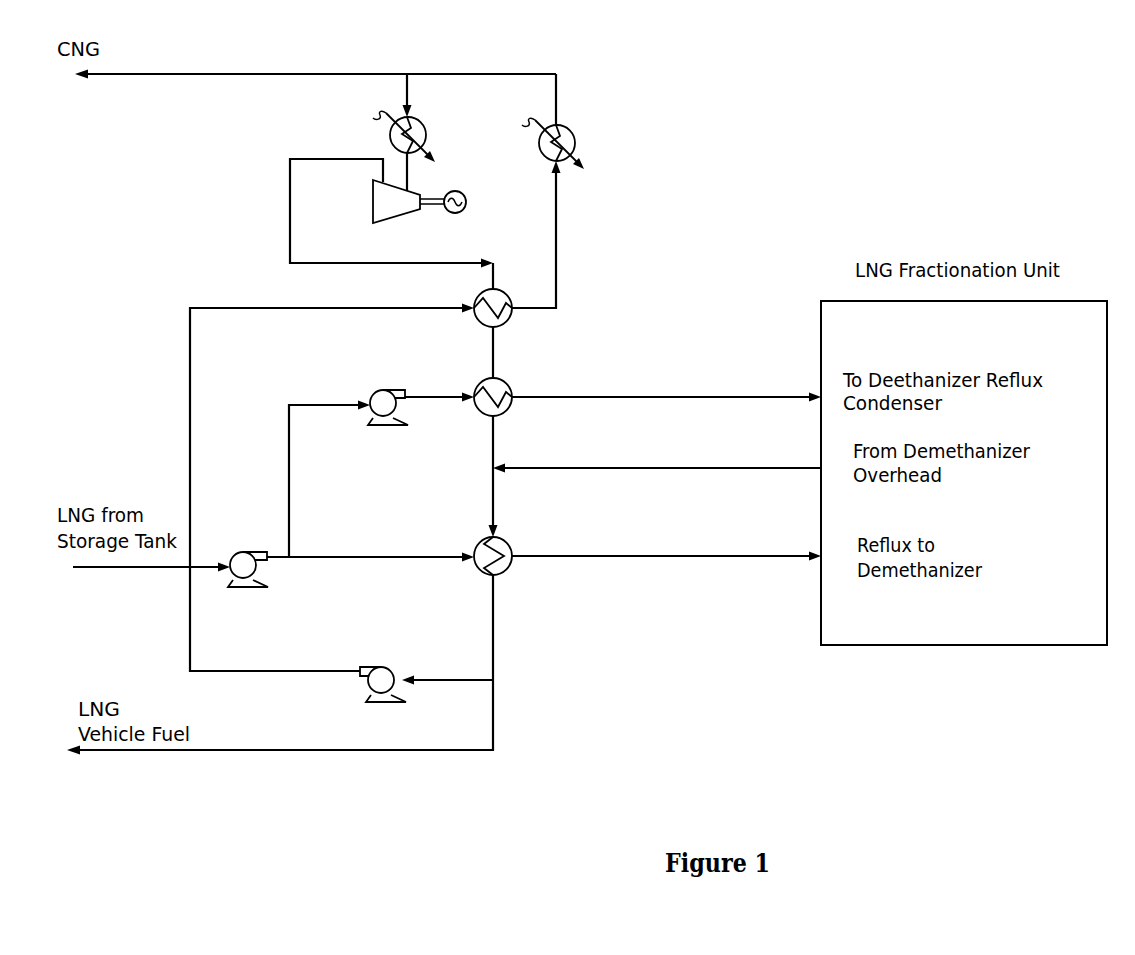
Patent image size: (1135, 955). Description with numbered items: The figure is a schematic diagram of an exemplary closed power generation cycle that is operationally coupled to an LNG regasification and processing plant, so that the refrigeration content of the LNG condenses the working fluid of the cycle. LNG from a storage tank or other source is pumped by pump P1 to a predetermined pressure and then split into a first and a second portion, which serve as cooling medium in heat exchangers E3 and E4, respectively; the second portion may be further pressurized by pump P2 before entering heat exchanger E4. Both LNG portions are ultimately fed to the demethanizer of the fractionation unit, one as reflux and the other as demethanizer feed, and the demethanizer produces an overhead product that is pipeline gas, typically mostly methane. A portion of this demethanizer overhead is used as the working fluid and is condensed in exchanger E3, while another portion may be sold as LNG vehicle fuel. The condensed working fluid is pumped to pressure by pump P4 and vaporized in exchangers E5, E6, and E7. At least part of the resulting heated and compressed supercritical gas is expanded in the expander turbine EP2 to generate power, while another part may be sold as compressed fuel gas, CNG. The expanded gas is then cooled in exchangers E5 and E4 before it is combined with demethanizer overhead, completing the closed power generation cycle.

The exchanger E7 is at (423, 131).
The exchanger E6 is at (566, 135).
The expander turbine EP2 is at (454, 201).
The exchanger E5 is at (506, 283).
The heat exchanger E4 is at (511, 382).
The heat exchanger E3 is at (513, 576).
The pump P1 is at (248, 547).
The pump P2 is at (388, 392).
The pump P4 is at (383, 665).